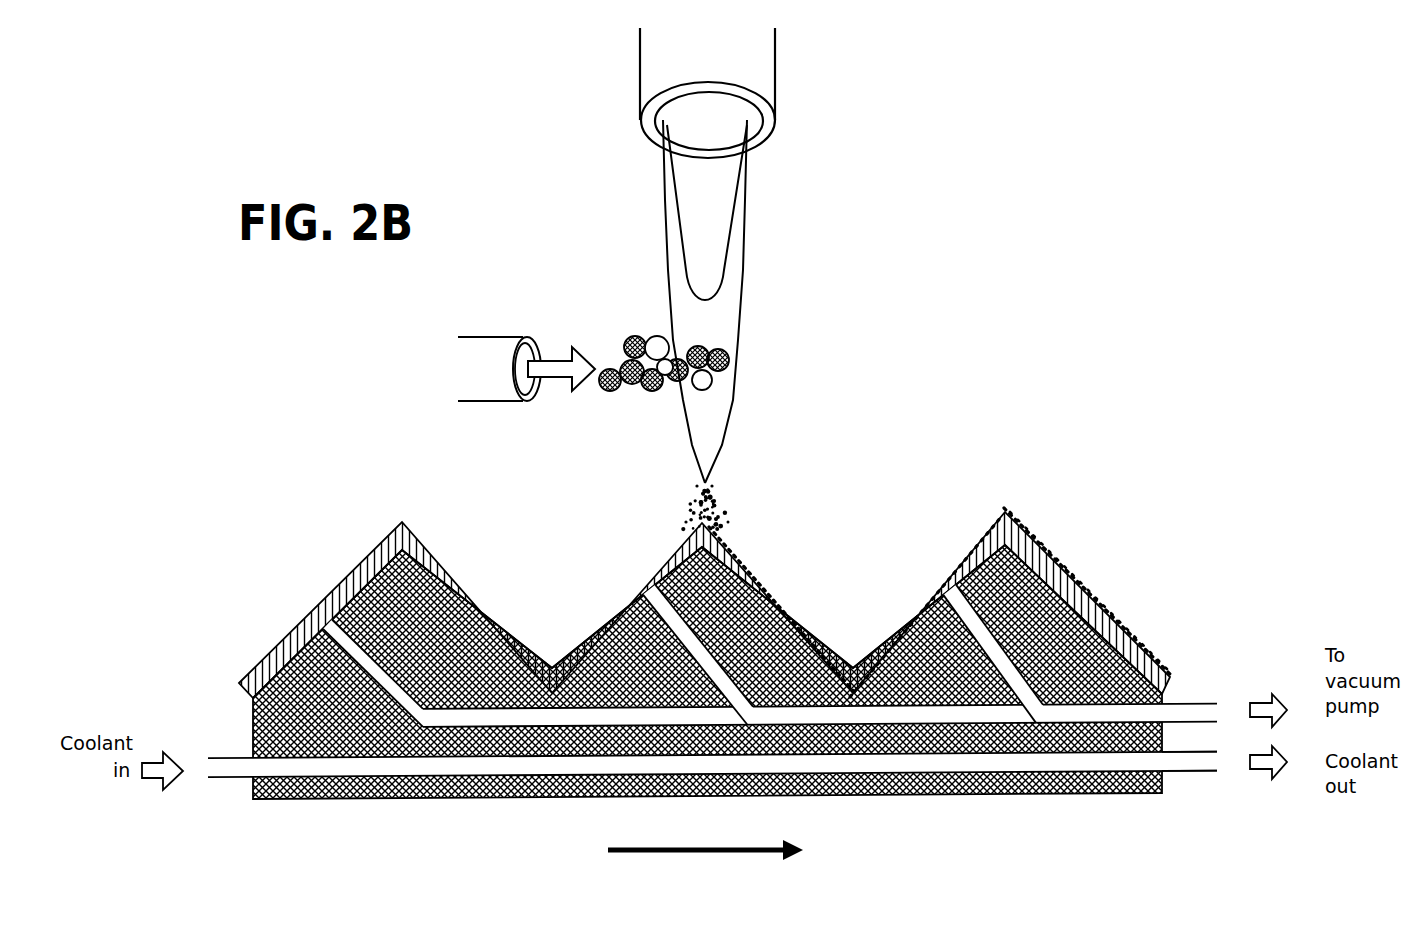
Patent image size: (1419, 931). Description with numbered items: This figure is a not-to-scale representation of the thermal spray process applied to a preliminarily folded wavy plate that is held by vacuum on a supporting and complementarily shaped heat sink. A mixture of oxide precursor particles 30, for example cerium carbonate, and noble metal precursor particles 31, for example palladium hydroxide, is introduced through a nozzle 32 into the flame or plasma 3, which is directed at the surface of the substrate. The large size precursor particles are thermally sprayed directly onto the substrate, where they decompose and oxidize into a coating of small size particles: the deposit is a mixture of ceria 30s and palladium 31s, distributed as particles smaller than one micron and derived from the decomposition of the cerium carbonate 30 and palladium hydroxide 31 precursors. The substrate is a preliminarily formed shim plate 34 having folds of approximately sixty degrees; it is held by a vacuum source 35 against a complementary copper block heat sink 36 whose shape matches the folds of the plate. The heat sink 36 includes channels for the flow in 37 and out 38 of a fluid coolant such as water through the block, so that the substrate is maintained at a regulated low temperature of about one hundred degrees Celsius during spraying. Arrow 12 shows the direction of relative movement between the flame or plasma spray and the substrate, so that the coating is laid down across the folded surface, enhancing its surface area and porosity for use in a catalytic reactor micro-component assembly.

The flame or plasma 3 is at (742, 325).
The arrow 12 is at (705, 870).
The oxide precursor particles 30 is at (629, 340).
The noble metal precursor particles 31 is at (667, 372).
The ceria 30s is at (948, 565).
The palladium 31s is at (1078, 580).
The nozzle 32 is at (521, 337).
The shim plate 34 is at (285, 638).
The vacuum source 35 is at (1193, 713).
The copper block heat sink 36 is at (250, 735).
The coolant flow in 37 is at (228, 782).
The coolant flow out 38 is at (1208, 773).